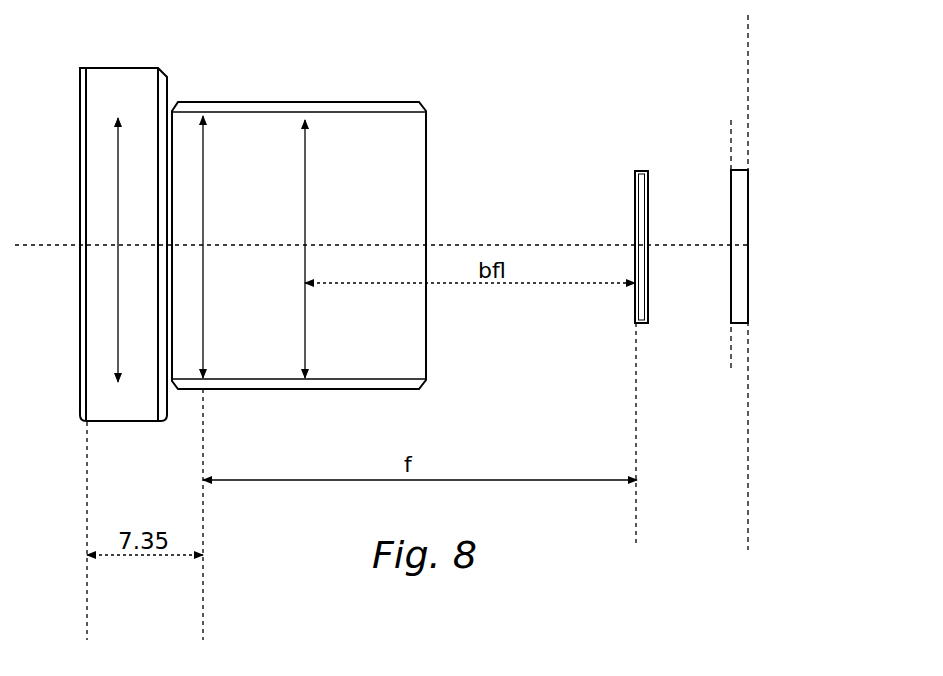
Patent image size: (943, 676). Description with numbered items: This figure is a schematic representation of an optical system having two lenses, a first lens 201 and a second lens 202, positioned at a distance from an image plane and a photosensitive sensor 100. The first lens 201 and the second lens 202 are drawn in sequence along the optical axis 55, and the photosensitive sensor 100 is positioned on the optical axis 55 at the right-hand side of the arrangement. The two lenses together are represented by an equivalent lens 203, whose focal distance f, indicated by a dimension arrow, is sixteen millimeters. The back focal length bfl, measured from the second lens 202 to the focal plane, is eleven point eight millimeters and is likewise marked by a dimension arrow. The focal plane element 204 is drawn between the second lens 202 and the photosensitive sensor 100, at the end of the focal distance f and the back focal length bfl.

The first lens 201 is at (116, 116).
The second lens 202 is at (305, 118).
The equivalent lens 203 is at (203, 114).
The focal plane aperture 204 is at (637, 387).
The optical axis 55 is at (517, 242).
The photosensitive sensor 100 is at (740, 221).